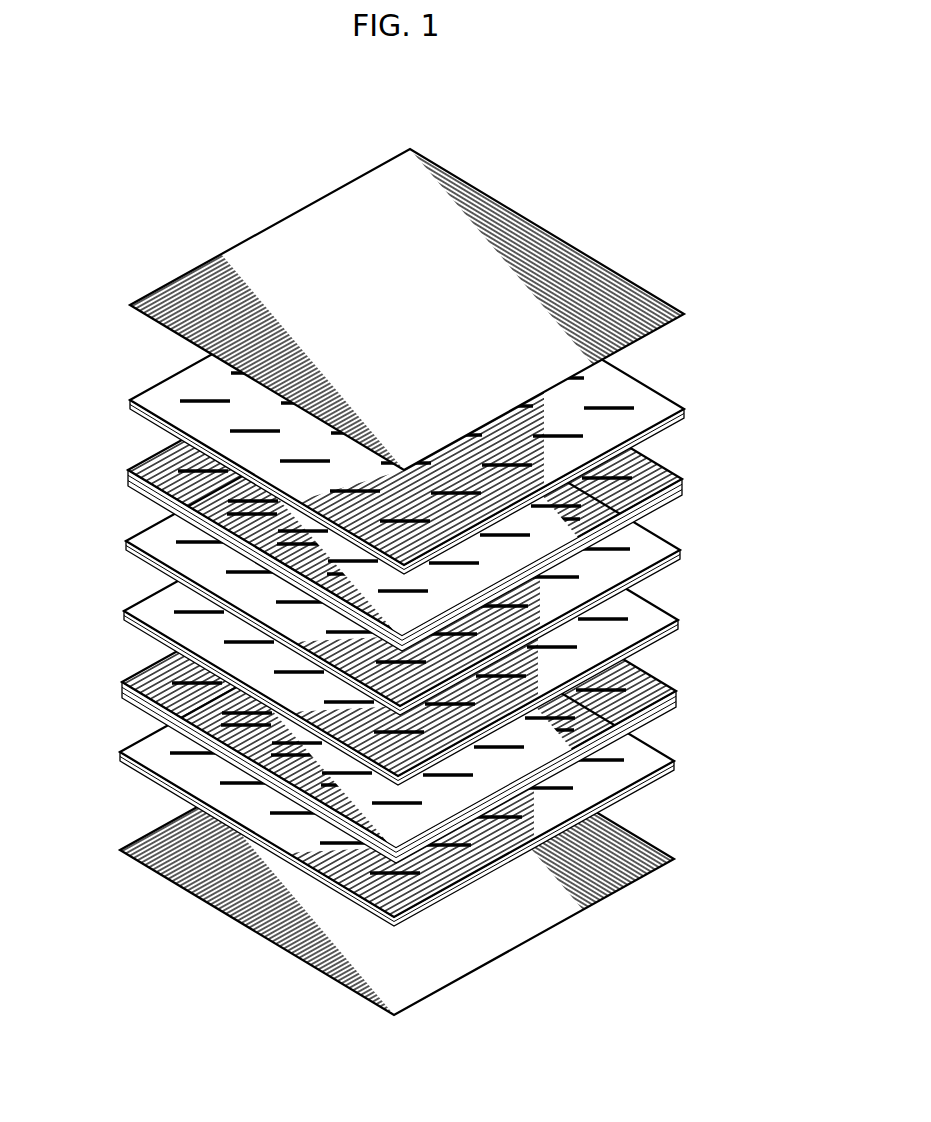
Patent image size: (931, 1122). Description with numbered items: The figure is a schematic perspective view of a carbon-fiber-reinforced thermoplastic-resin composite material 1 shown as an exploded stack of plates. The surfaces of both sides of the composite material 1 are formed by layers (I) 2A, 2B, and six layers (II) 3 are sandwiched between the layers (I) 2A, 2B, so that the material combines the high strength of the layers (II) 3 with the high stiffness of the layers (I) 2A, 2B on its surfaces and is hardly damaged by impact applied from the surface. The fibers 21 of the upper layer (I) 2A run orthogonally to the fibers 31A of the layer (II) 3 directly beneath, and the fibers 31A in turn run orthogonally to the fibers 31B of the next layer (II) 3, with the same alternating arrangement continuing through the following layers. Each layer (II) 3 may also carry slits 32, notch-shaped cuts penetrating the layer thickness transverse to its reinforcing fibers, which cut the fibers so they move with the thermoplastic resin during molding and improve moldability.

The carbon-fiber-reinforced thermoplastic-resin composite material 1 is at (266, 170).
The layer (I) 2A is at (433, 309).
The layer (I) 2B is at (180, 843).
The carbon fiber 21 is at (605, 257).
The layer (II) 3 is at (112, 380).
The carbon fiber 31A is at (648, 397).
The carbon fiber 31B is at (648, 470).
The slit 32 is at (610, 683).